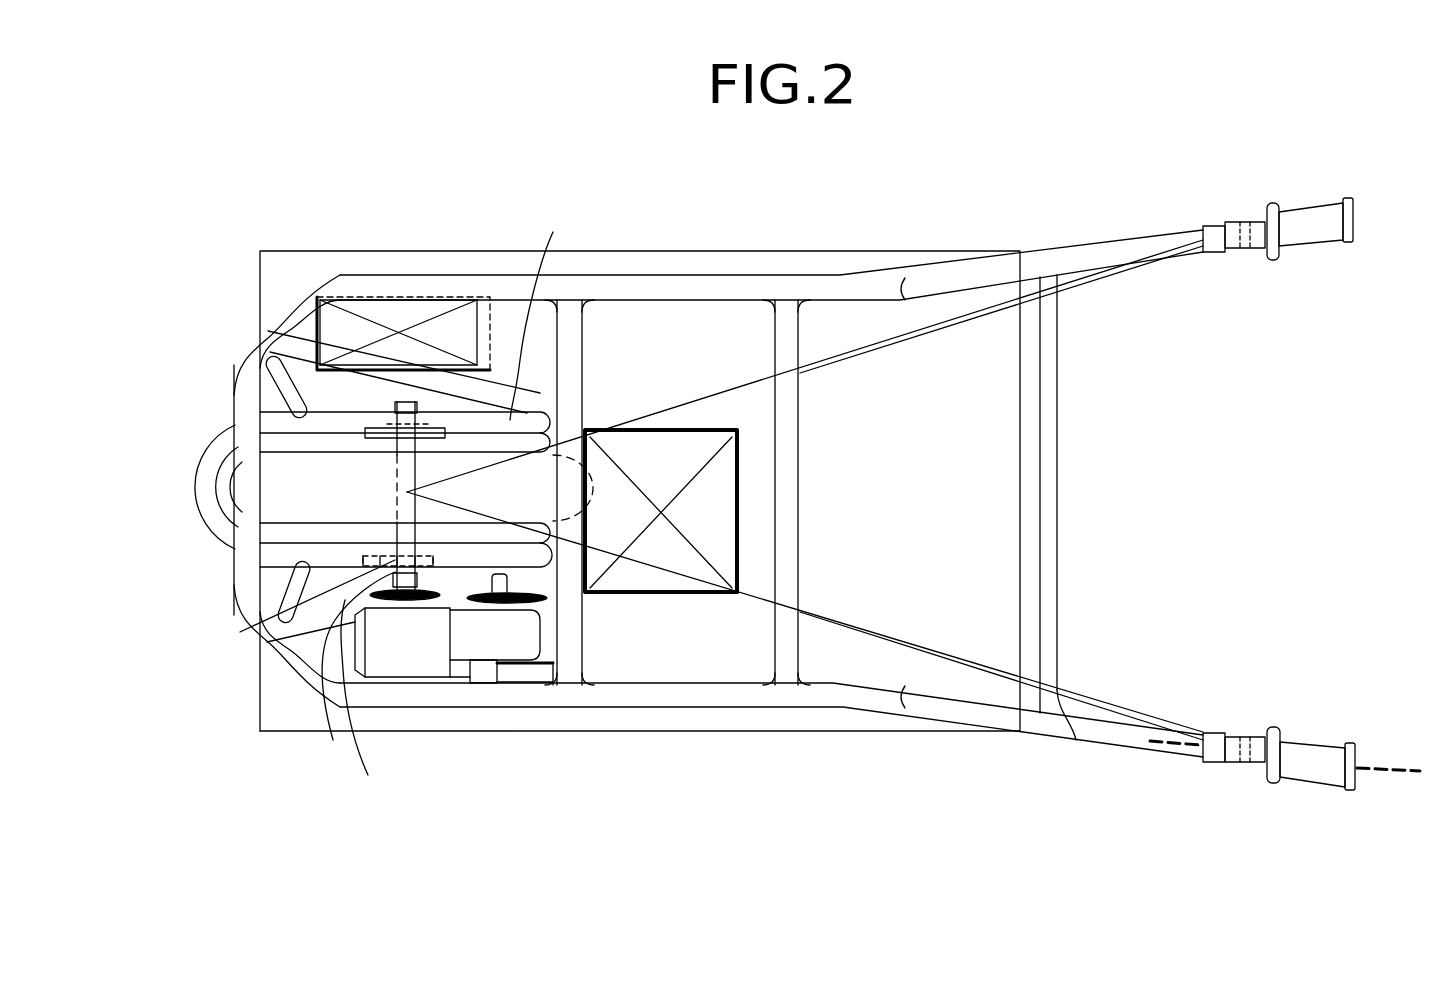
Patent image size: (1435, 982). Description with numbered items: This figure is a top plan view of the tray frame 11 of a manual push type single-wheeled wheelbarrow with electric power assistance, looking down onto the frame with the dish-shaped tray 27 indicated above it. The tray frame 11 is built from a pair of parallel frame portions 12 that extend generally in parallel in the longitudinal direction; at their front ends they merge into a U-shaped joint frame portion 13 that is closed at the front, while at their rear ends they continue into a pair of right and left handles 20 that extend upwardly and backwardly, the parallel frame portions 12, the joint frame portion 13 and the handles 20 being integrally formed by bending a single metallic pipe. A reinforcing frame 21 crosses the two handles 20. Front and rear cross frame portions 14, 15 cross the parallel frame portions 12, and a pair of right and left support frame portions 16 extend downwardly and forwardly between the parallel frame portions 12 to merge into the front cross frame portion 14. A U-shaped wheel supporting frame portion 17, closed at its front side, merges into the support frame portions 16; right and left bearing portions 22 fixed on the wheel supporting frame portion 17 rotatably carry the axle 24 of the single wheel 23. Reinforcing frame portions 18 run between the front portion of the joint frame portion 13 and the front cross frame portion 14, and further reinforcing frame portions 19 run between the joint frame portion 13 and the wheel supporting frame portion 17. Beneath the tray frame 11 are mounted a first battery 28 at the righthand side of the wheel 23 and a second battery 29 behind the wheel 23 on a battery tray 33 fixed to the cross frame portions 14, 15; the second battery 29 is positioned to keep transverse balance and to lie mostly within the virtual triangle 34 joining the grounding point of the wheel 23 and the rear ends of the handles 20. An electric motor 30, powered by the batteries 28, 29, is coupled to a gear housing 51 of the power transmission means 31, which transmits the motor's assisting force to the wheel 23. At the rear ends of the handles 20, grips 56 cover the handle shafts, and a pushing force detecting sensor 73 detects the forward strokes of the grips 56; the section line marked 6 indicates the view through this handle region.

The section line 6- 6 is at (1153, 748).
The tray frame 11 is at (653, 268).
The parallel frame portions 12 is at (752, 282).
The joint frame portion 13 is at (252, 368).
The front cross frame portion 14 is at (575, 643).
The rear cross frame portion 15 is at (797, 552).
The support frame portions 16 is at (515, 412).
The wheel supporting frame portion 17 is at (215, 527).
The reinforcing frame portions 18 is at (468, 510).
The reinforcing frame portions 19 is at (293, 335).
The handles 20 is at (1067, 265).
The reinforcing frame 21 is at (1048, 470).
The bearing portions 22 is at (415, 430).
The wheel 23 is at (260, 415).
The axle 24 is at (382, 507).
The tray 27 is at (607, 735).
The first battery 28 is at (413, 313).
The second battery 29 is at (687, 447).
The electric motor 30 is at (416, 648).
The power transmission means 31 is at (455, 578).
The battery tray 33 is at (722, 597).
The virtual triangle 34 is at (1076, 740).
The gear housing 51 is at (463, 650).
The grips 56 is at (1302, 222).
The pushing force detecting sensor 73 is at (1210, 222).